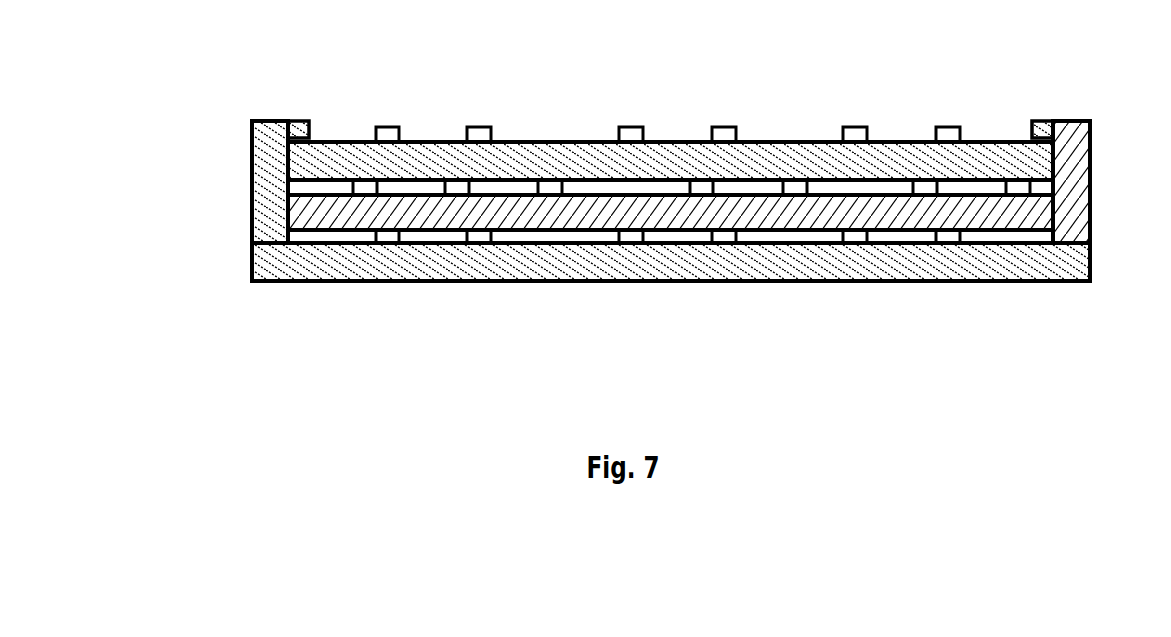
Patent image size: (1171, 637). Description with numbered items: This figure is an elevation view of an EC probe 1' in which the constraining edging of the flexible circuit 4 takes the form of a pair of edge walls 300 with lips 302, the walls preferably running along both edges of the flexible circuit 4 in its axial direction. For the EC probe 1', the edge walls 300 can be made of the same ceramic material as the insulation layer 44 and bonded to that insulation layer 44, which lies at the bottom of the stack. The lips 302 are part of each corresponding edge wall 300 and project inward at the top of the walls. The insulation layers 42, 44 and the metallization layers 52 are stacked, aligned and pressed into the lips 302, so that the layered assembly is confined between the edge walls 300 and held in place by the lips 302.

The EC probe 1' is at (671, 234).
The flexible circuit 4 is at (670, 149).
The insulation layer 42 is at (828, 150).
The insulation layer 44 is at (1045, 273).
The metallization layers 52 is at (400, 127).
The edge walls 300 is at (252, 198).
The lips 302 is at (300, 122).